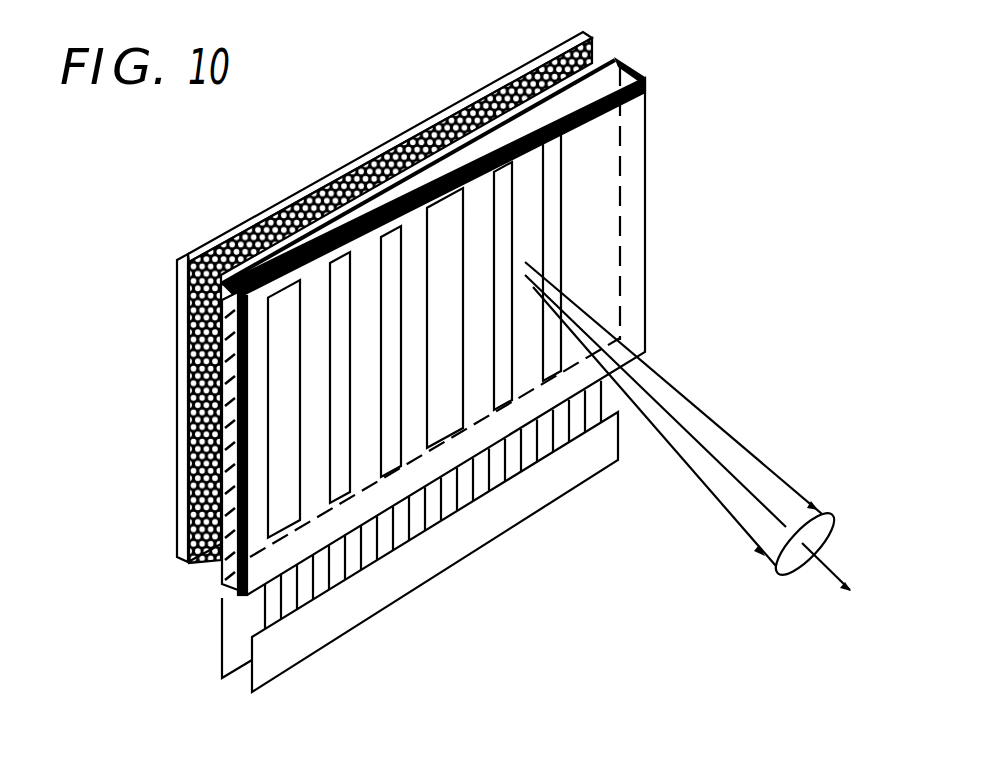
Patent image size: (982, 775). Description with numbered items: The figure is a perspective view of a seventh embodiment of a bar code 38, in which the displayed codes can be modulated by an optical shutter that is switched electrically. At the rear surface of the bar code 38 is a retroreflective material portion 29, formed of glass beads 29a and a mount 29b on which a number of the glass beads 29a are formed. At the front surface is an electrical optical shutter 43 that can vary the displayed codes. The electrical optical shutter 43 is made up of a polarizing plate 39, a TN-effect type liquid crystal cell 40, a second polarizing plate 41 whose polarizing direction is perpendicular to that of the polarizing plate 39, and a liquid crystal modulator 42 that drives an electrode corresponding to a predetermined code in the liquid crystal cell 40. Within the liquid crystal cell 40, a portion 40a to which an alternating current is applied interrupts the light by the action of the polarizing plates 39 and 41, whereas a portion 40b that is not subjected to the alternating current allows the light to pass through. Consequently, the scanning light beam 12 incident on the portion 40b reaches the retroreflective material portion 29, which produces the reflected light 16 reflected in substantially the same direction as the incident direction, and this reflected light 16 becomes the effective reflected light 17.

The scanning light beam 12 is at (822, 562).
The reflected light 16 is at (708, 412).
The effective reflected light 17 is at (804, 478).
The retroreflective material portion 29 is at (77, 233).
The glass beads 29a is at (209, 297).
The mount 29b is at (208, 245).
The bar code 38 is at (232, 206).
The polarizing plate 39 is at (607, 58).
The TN-effect type liquid crystal cell 40 is at (637, 63).
The portion to which alternating current is applied 40a is at (555, 220).
The portion not subjected to alternating current 40b is at (533, 235).
The polarizing plate 41 is at (637, 104).
The liquid crystal modulator 42 is at (479, 549).
The electrical optical shutter 43 is at (786, 150).